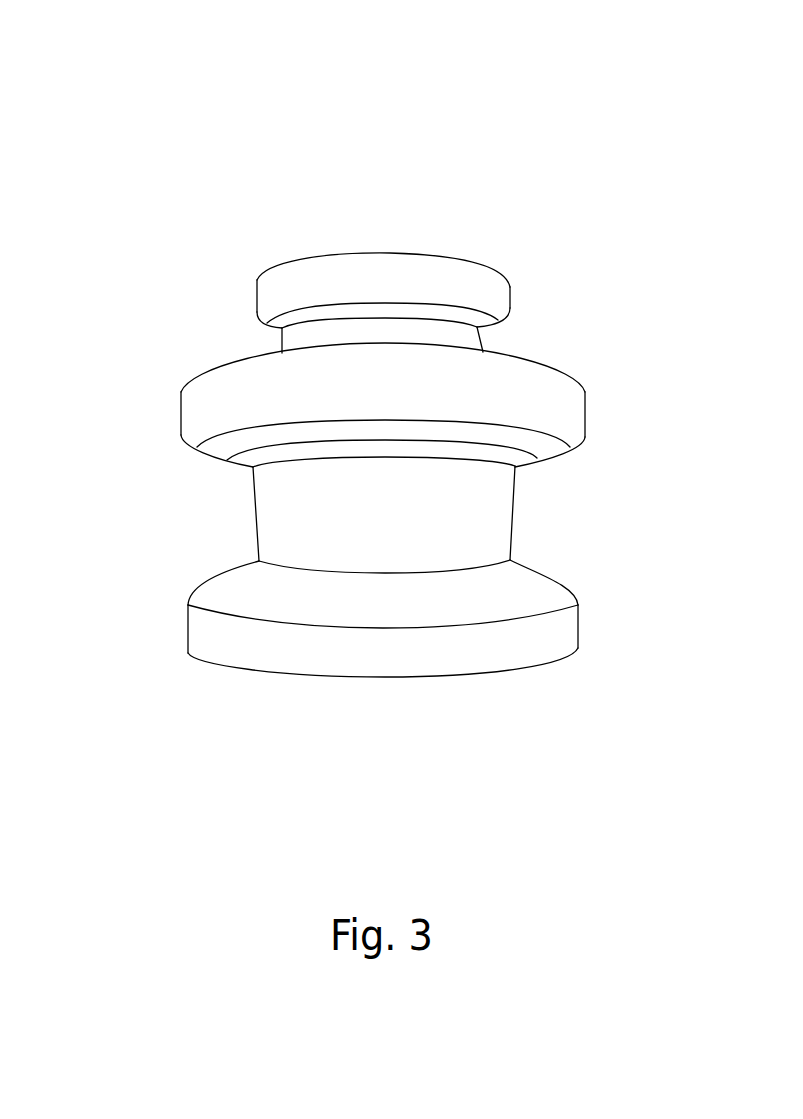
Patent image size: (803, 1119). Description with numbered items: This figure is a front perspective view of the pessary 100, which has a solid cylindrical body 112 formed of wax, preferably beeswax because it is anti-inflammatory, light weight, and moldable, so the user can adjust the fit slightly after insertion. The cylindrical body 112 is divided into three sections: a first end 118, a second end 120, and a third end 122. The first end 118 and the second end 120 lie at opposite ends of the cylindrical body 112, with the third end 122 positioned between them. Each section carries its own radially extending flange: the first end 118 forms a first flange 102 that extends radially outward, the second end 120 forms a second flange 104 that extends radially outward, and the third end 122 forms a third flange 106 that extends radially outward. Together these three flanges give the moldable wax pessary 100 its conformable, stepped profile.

The pessary 100 is at (310, 113).
The first flange 102 is at (223, 665).
The second flange 104 is at (497, 273).
The third flange 106 is at (580, 388).
The cylindrical body 112 is at (514, 522).
The first end 118 is at (578, 650).
The second end 120 is at (257, 293).
The third end 122 is at (181, 417).